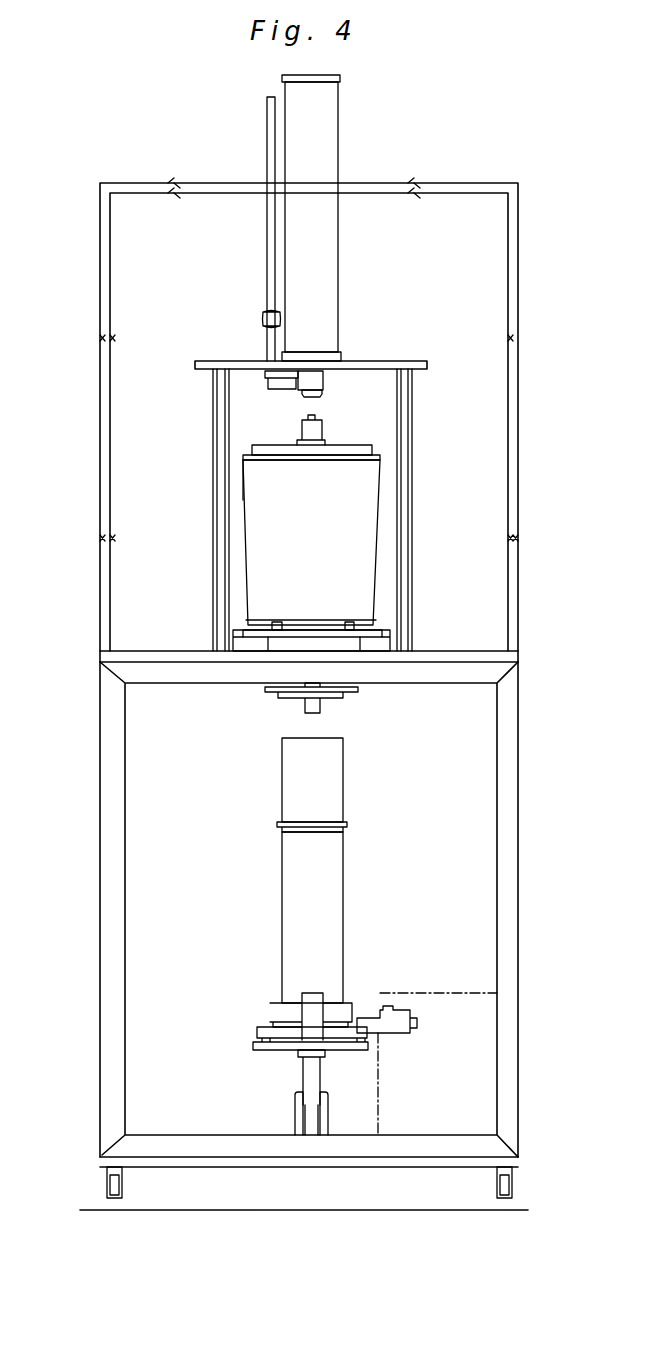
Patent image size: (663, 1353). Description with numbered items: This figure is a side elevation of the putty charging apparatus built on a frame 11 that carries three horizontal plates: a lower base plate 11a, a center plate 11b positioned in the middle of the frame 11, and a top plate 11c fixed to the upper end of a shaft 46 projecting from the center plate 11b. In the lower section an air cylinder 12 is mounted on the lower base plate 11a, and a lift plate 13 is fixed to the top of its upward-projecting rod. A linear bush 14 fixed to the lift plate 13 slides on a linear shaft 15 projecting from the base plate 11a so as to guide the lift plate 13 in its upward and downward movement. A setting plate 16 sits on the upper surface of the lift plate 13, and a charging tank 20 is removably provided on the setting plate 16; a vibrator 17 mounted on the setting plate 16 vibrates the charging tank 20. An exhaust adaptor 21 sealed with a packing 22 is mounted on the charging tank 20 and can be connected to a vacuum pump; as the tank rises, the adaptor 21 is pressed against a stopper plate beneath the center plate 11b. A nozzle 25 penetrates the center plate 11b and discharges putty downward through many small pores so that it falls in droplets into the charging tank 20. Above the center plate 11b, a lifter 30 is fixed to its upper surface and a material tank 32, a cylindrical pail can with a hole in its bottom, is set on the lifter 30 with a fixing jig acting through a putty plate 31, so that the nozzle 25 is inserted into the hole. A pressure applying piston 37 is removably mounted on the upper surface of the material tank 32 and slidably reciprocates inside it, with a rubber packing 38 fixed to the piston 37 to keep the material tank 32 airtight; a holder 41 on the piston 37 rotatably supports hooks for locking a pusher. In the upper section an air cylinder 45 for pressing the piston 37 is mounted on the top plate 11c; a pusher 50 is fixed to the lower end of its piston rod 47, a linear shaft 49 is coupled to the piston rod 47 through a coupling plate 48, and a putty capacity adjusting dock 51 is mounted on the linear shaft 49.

The frame 11 is at (98, 797).
The lower base plate 11a is at (173, 1155).
The center plate 11b is at (490, 651).
The top plate 11c is at (237, 361).
The air cylinder 12 is at (296, 1113).
The lift plate 13 is at (254, 1046).
The linear bush 14 is at (318, 1075).
The linear shaft 15 is at (318, 1117).
The setting plate 16 is at (268, 1016).
The vibrator 17 is at (383, 1010).
The charging tank 20 is at (344, 887).
The exhaust adaptor 21 is at (329, 786).
The packing 22 is at (346, 824).
The nozzle 25 is at (319, 708).
The lifter 30 is at (338, 630).
The putty plate 31 is at (380, 630).
The material tank 32 is at (372, 478).
The pressure applying piston 37 is at (368, 446).
The rubber packing 38 is at (253, 462).
The holder 41 is at (325, 423).
The air cylinder 45 is at (338, 286).
The shaft 46 is at (213, 402).
The piston rod 47 is at (317, 371).
The coupling plate 48 is at (292, 385).
The linear shaft 49 is at (267, 268).
The pusher 50 is at (323, 392).
The putty capacity adjusting dock 51 is at (262, 314).